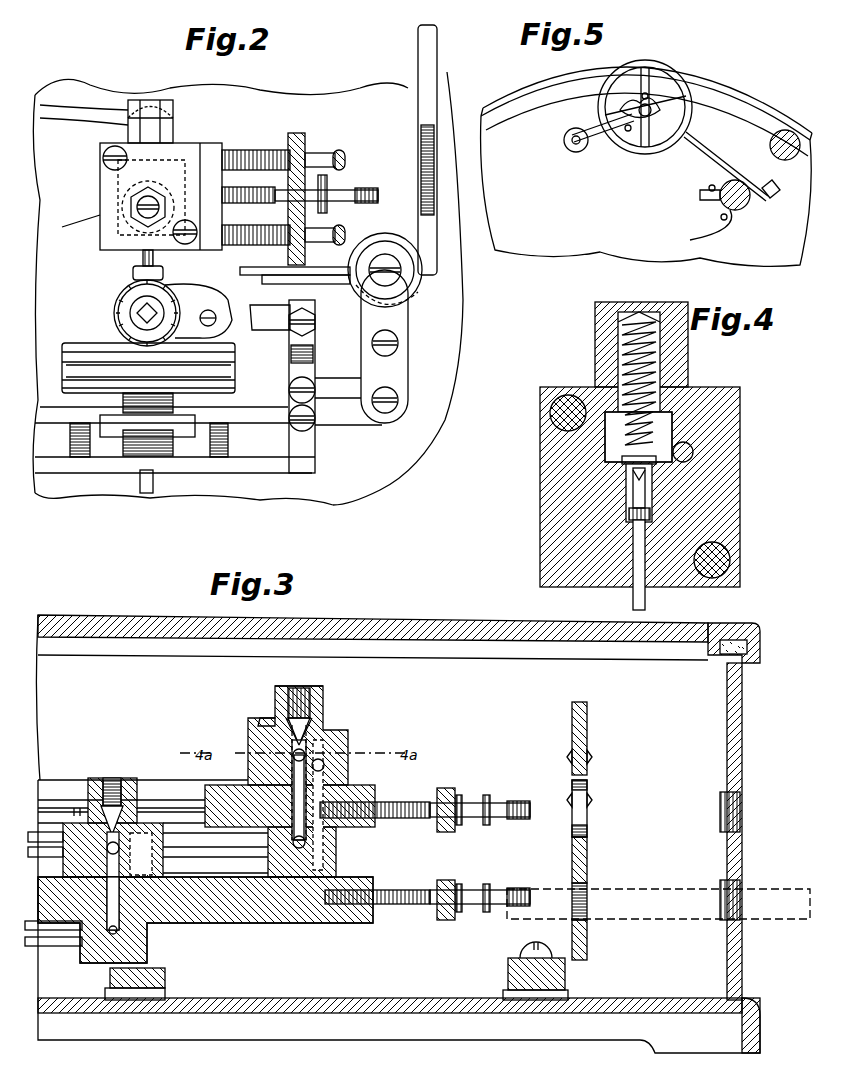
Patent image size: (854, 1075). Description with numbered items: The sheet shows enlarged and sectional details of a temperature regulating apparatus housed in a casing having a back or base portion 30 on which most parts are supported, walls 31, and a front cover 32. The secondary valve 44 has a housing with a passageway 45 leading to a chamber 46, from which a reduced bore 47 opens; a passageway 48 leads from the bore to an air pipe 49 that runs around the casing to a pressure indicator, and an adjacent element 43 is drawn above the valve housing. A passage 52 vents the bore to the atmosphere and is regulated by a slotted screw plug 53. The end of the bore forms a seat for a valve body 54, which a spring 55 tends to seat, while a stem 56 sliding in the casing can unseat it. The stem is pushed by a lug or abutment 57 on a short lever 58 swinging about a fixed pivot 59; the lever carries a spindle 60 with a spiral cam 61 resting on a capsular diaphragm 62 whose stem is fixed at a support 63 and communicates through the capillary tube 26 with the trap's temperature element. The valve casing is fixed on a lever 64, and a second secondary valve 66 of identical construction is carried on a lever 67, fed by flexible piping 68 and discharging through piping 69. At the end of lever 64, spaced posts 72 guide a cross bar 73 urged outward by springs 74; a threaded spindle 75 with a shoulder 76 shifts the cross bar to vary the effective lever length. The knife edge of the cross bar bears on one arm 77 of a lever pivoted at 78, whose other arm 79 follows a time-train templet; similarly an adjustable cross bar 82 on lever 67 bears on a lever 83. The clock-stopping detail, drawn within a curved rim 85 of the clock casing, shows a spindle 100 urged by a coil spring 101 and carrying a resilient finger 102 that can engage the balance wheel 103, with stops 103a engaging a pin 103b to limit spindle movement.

In FIG. 2, the capillary tube 26 is at (168, 485).
In FIG. 2, the back or base portion 30 is at (262, 492).
In FIG. 3, the back or base portion 30 is at (428, 1015).
In FIG. 3, the casing walls 31 is at (730, 710).
In FIG. 3, the cover 32 is at (432, 617).
In FIG. 2, the control rod 43 is at (176, 125).
In FIG. 3, the control rod 43 is at (190, 848).
In FIG. 2, the secondary valve 44 is at (108, 178).
In FIG. 4, the secondary valve 44 is at (720, 400).
In FIG. 3, the secondary valve 44 is at (338, 738).
In FIG. 4, the passageway 45 is at (693, 450).
In FIG. 3, the passageway 45 is at (325, 760).
In FIG. 4, the chamber 46 is at (690, 425).
In FIG. 3, the chamber 46 is at (334, 722).
In FIG. 4, the reduced bore 47 is at (665, 490).
In FIG. 3, the reduced bore 47 is at (293, 755).
In FIG. 4, the passageway 48 is at (655, 500).
In FIG. 3, the passageway 48 is at (305, 838).
In FIG. 2, the air pipe 49 is at (82, 110).
In FIG. 3, the air pipe 49 is at (245, 858).
In FIG. 3, the passage 52 is at (266, 716).
In FIG. 2, the screw plug 53 is at (136, 208).
In FIG. 3, the screw plug 53 is at (305, 688).
In FIG. 4, the valve body 54 is at (628, 470).
In FIG. 4, the spring 55 is at (628, 340).
In FIG. 2, the stem 56 is at (142, 258).
In FIG. 4, the stem 56 is at (632, 585).
In FIG. 3, the stem 56 is at (292, 748).
In FIG. 2, the lug or abutment 57 is at (165, 272).
In FIG. 2, the short lever 58 is at (260, 330).
In FIG. 2, the fixed pivot 59 is at (316, 318).
In FIG. 2, the spindle 60 is at (132, 312).
In FIG. 2, the spiral cam 61 is at (118, 292).
In FIG. 2, the capsular diaphragm 62 is at (96, 343).
In FIG. 2, the diaphragm stem support 63 is at (130, 445).
In FIG. 2, the lever 64 is at (100, 225).
In FIG. 3, the lever 64 is at (185, 790).
In FIG. 3, the secondary valve 66 is at (98, 795).
In FIG. 3, the lever 67 is at (210, 910).
In FIG. 3, the flexible piping 68 is at (45, 935).
In FIG. 3, the piping 69 is at (72, 947).
In FIG. 2, the posts 72 is at (336, 148).
In FIG. 2, the cross bar 73 is at (296, 133).
In FIG. 3, the cross bar 73 is at (448, 788).
In FIG. 2, the springs 74 is at (246, 150).
In FIG. 2, the threaded spindle 75 is at (345, 192).
In FIG. 3, the threaded spindle 75 is at (478, 803).
In FIG. 2, the shoulder 76 is at (327, 185).
In FIG. 3, the shoulder 76 is at (460, 795).
In FIG. 2, the arm 77 is at (270, 268).
In FIG. 2, the pivot 78 is at (398, 290).
In FIG. 2, the arm 79 is at (418, 48).
In FIG. 3, the arm 79 is at (571, 716).
In FIG. 3, the adjustable cross bar or extension 82 is at (446, 882).
In FIG. 3, the lever 83 is at (590, 840).
In FIG. 5, the rim 85 is at (766, 90).
In FIG. 5, the spindle 100 is at (706, 231).
In FIG. 5, the coil spring 101 is at (772, 158).
In FIG. 5, the resilient finger 102 is at (688, 125).
In FIG. 5, the balance wheel 103 is at (690, 98).
In FIG. 5, the stops 103a is at (722, 168).
In FIG. 5, the pin 103b is at (700, 195).